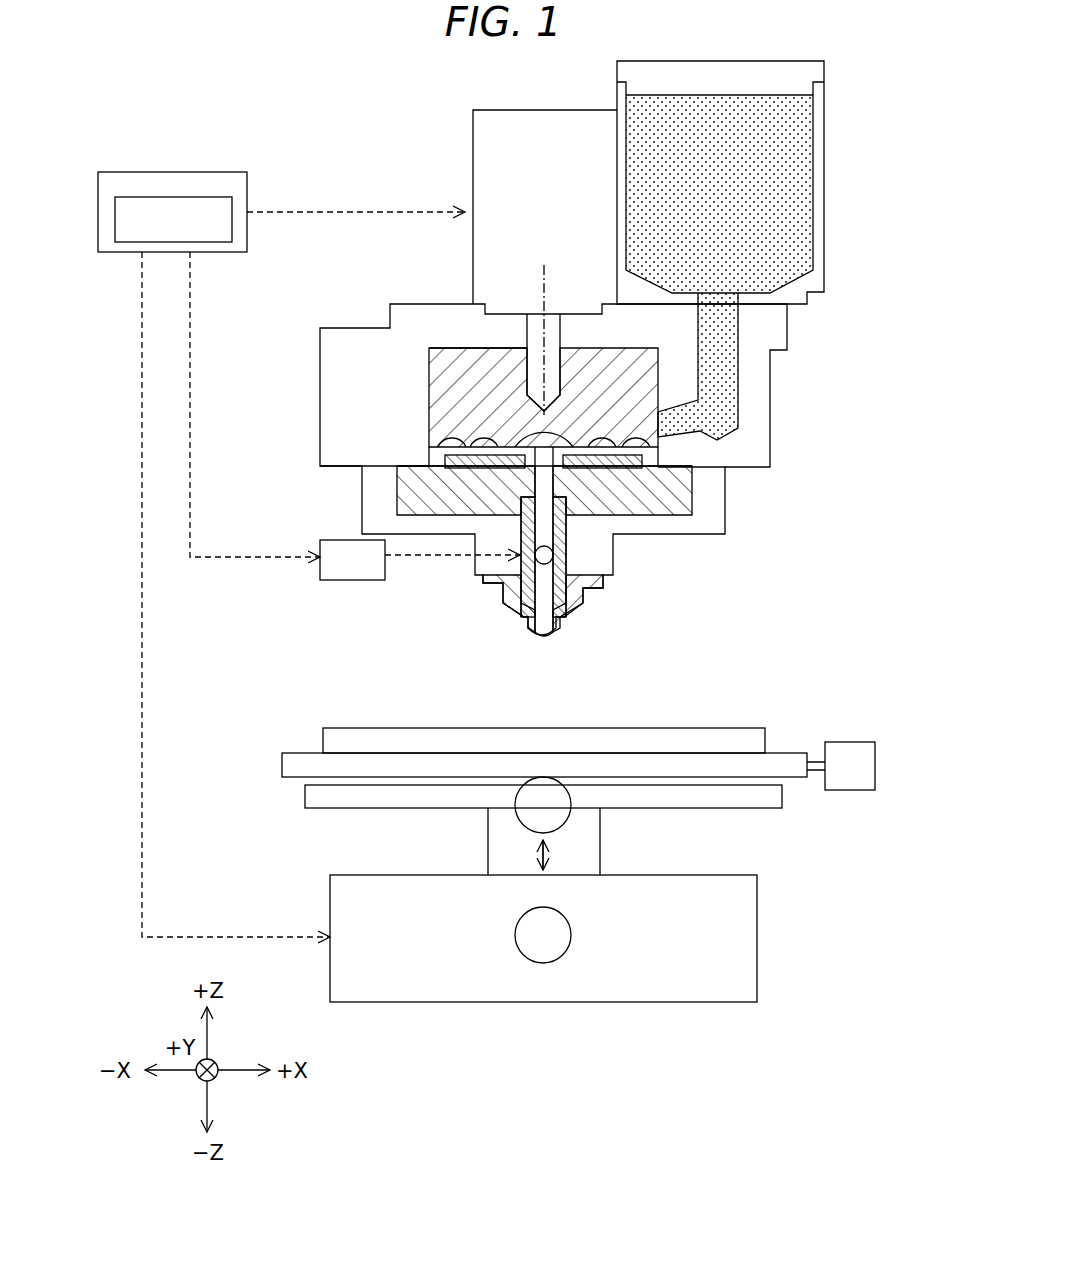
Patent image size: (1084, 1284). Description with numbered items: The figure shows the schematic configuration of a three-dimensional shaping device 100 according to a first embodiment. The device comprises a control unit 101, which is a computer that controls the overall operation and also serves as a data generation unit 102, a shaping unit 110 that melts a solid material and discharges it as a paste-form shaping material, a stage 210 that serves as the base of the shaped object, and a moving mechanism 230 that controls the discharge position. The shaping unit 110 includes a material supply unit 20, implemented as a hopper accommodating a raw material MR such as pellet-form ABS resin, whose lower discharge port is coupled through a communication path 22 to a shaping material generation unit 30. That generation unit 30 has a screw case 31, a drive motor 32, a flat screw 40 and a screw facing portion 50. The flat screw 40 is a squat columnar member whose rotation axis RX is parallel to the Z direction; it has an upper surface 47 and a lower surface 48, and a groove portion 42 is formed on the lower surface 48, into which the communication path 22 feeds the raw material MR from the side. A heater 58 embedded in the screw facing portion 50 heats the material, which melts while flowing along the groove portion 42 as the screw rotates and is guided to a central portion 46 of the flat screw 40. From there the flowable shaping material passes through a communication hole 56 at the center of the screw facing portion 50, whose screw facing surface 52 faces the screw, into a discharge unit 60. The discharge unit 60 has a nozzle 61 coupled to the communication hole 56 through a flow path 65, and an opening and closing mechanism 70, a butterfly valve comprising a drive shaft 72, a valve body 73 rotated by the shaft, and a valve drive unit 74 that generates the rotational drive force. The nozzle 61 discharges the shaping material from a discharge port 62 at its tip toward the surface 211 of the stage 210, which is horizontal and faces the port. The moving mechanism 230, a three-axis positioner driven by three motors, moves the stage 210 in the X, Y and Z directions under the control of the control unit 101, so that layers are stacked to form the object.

The three-dimensional shaping device 100 is at (222, 103).
The control unit 101 is at (170, 172).
The data generation unit 102 is at (135, 197).
The shaping unit 110 is at (413, 100).
The material supply unit 20 is at (759, 250).
The raw material MR is at (790, 141).
The communication path 22 is at (718, 368).
The shaping material generation unit 30 is at (370, 166).
The screw case 31 is at (438, 304).
The drive motor 32 is at (472, 140).
The rotation axis RX is at (544, 272).
The flat screw 40 is at (436, 360).
The groove portion 42 is at (540, 432).
The central portion 46 is at (495, 438).
The upper surface 47 is at (527, 396).
The lower surface 48 is at (445, 478).
The screw facing portion 50 is at (522, 474).
The screw facing surface 52 is at (445, 456).
The communication hole 56 is at (565, 508).
The heater 58 is at (700, 493).
The discharge unit 60 is at (683, 590).
The nozzle 61 is at (597, 597).
The discharge port 62 is at (548, 637).
The flow path 65 is at (560, 520).
The opening and closing mechanism 70 is at (377, 628).
The drive shaft 72 is at (517, 583).
The valve body 73 is at (522, 607).
The valve drive unit 74 is at (335, 580).
The stage 210 is at (708, 730).
The surface 211 is at (633, 728).
The moving mechanism 230 is at (582, 848).